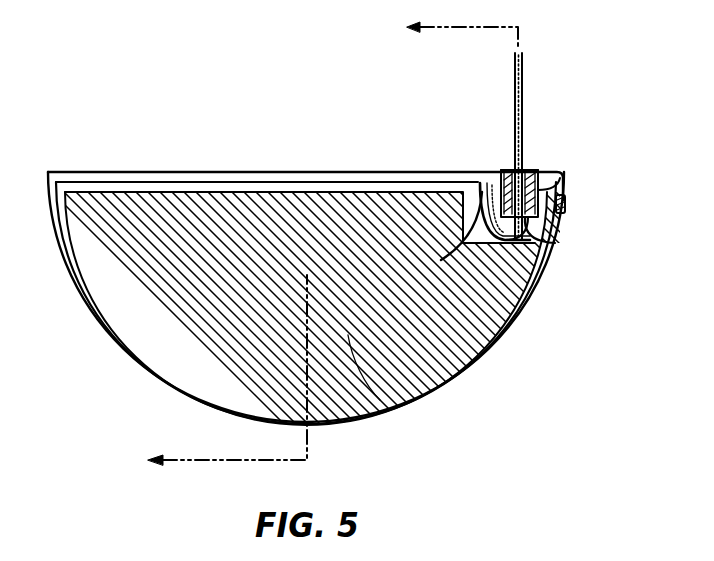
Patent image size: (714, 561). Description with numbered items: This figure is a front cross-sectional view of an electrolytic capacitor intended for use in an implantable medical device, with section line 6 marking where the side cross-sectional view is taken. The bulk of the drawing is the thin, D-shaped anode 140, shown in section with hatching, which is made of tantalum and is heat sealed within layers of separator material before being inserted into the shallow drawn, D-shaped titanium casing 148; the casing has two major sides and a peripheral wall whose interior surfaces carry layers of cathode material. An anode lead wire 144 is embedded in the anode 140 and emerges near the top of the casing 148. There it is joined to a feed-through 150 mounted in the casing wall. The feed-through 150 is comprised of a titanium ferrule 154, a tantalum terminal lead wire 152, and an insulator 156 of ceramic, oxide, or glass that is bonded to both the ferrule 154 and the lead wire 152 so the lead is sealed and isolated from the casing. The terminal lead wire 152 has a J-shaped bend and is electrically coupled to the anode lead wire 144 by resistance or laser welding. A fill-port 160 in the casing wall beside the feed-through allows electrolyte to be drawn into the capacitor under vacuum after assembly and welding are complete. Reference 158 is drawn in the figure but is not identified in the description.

The section line 6- 6 is at (322, 246).
The anode 140 is at (390, 408).
The anode lead wire 144 is at (445, 240).
The casing 148 is at (530, 300).
The feed-through 150 is at (527, 172).
The terminal lead wire 152 is at (503, 170).
The ferrule 154 is at (562, 174).
The insulator 156 is at (540, 237).
The insulating fill 158 is at (468, 366).
The fill-port 160 is at (566, 205).